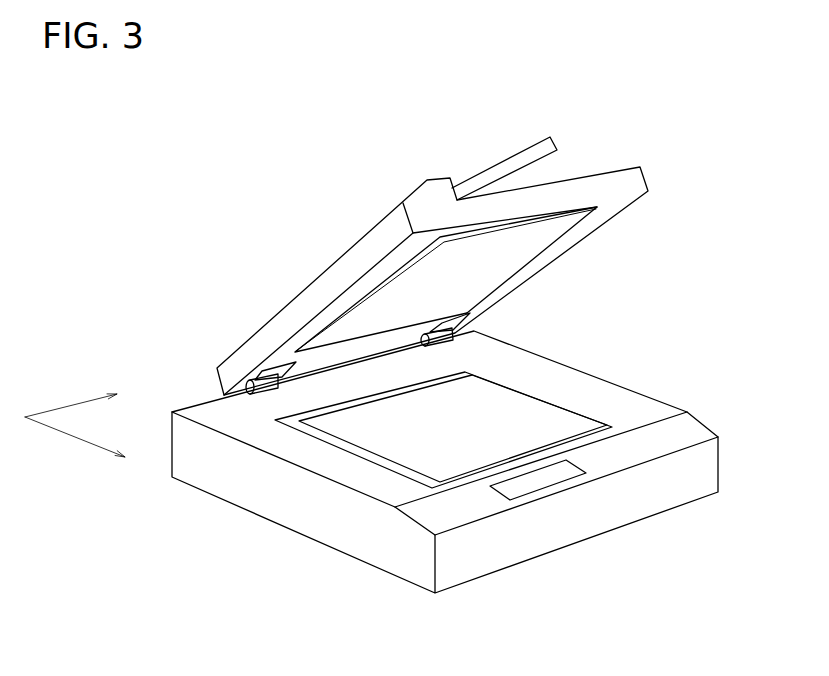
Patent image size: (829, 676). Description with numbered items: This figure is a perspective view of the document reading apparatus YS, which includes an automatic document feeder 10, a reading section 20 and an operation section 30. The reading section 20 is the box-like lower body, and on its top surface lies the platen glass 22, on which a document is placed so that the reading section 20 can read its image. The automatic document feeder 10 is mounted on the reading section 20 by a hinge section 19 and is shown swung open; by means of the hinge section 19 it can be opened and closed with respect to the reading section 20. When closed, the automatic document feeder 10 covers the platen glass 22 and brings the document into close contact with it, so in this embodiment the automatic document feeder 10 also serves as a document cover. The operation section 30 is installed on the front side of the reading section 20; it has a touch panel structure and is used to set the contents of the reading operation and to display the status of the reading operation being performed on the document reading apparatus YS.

The automatic document feeder 10 is at (437, 138).
The hinge section 19 is at (443, 346).
The reading section 20 is at (300, 553).
The platen glass 22 is at (496, 397).
The operation section 30 is at (540, 483).
The document reading apparatus YS is at (230, 272).